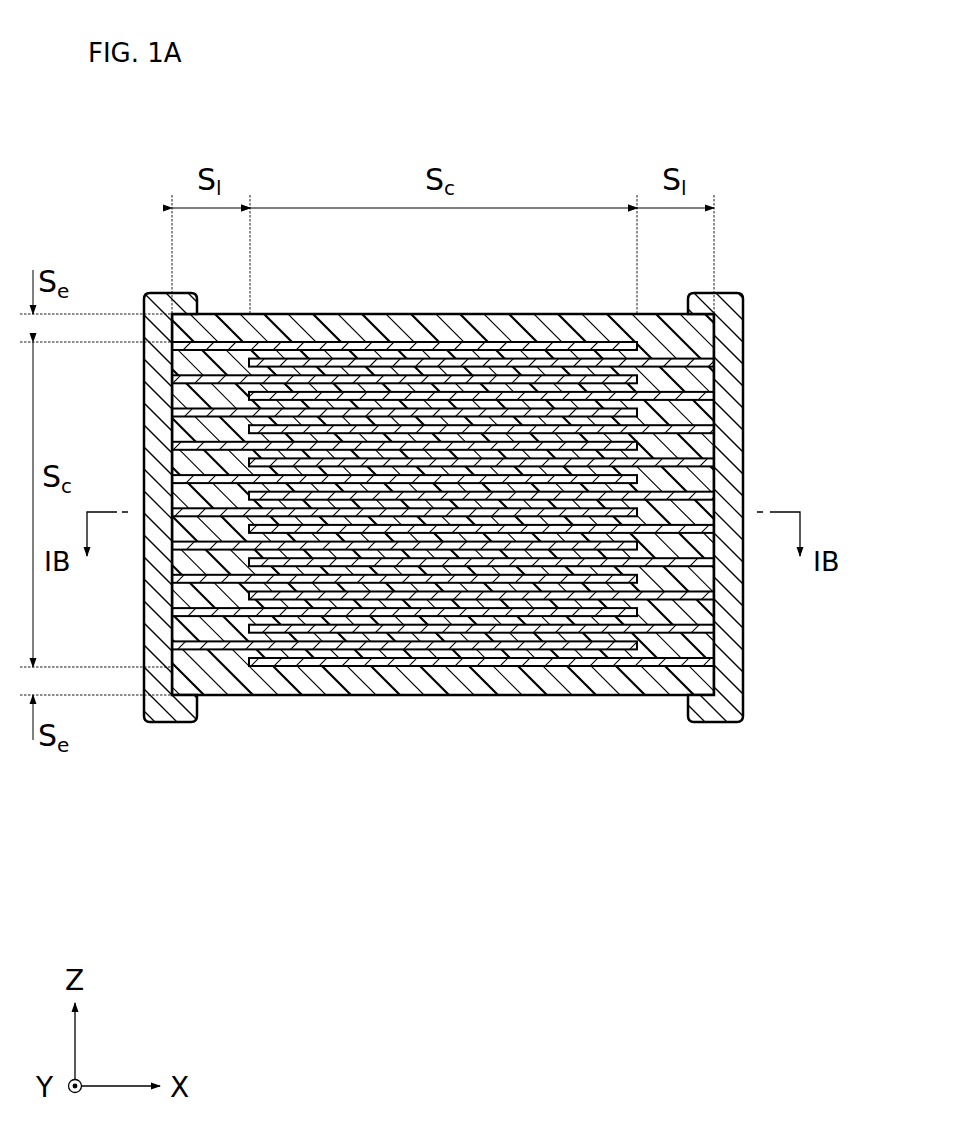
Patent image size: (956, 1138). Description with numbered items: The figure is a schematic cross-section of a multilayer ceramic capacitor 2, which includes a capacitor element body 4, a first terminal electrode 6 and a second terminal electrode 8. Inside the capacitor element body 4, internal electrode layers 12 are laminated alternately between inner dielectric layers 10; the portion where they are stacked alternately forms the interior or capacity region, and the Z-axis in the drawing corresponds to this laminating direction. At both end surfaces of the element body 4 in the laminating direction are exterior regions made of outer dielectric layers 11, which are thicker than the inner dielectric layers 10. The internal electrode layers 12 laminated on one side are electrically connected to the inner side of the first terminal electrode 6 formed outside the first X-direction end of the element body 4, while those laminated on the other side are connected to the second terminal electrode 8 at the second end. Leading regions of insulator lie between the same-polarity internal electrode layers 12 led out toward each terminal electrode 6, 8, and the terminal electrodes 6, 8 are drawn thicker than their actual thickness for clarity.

The multilayer ceramic capacitor 2 is at (478, 528).
The capacitor element body 4 is at (478, 518).
The first terminal electrode 6 is at (166, 722).
The second terminal electrode 8 is at (728, 345).
The inner dielectric layer 10 is at (405, 357).
The outer dielectric layer 11 is at (530, 332).
The internal electrode layer 12 is at (486, 346).